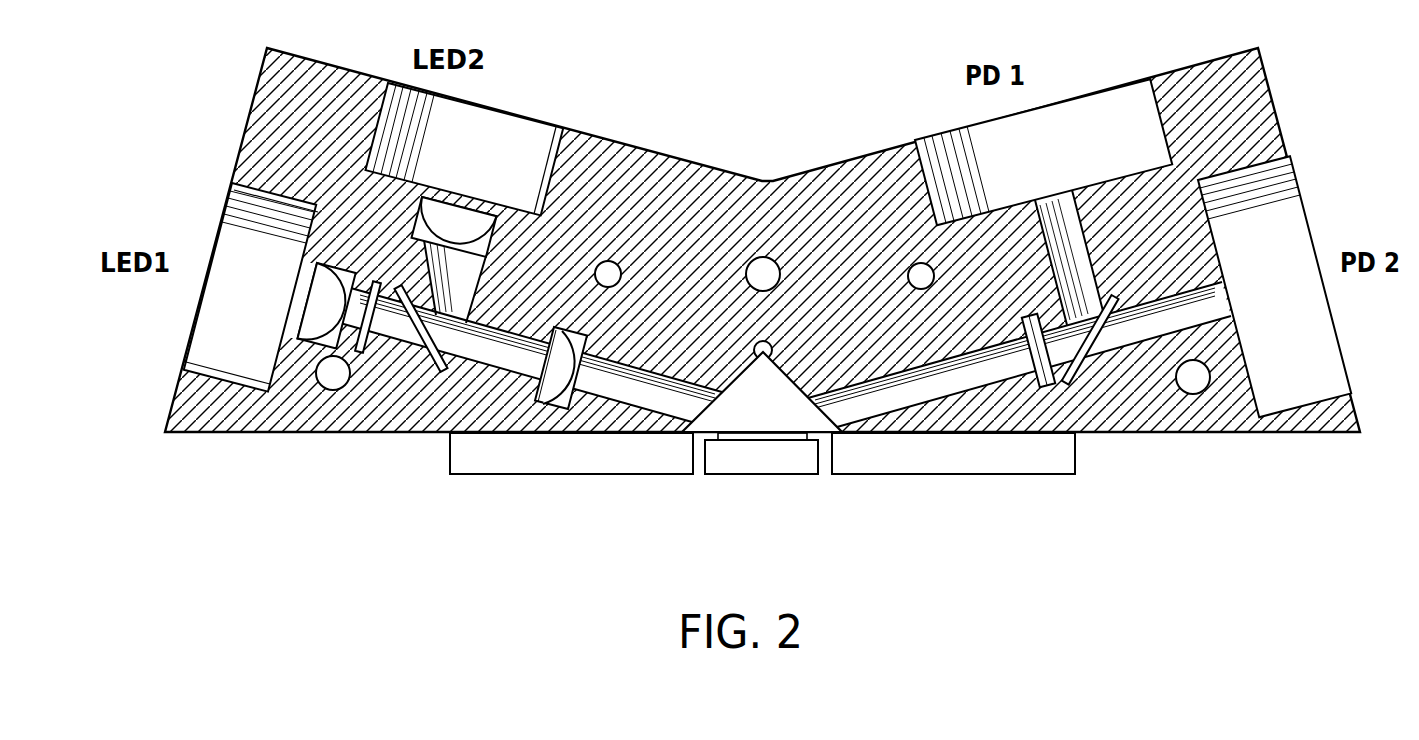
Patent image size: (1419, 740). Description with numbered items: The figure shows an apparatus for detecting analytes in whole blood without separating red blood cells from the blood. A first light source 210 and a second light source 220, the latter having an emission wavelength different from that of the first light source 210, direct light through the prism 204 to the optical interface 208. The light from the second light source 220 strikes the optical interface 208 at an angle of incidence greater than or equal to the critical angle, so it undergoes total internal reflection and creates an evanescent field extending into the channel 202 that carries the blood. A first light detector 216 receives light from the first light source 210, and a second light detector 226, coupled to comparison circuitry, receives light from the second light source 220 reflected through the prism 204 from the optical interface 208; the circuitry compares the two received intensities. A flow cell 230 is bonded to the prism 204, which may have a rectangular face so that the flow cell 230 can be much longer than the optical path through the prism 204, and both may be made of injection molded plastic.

The first light source 210 is at (268, 322).
The second light source 220 is at (516, 164).
The second light detector 226 is at (1086, 157).
The first light detector 216 is at (1284, 259).
The prism 204 is at (784, 424).
The channel 202 is at (804, 470).
The optical interface 208 is at (743, 438).
The flow cell 230 is at (996, 470).